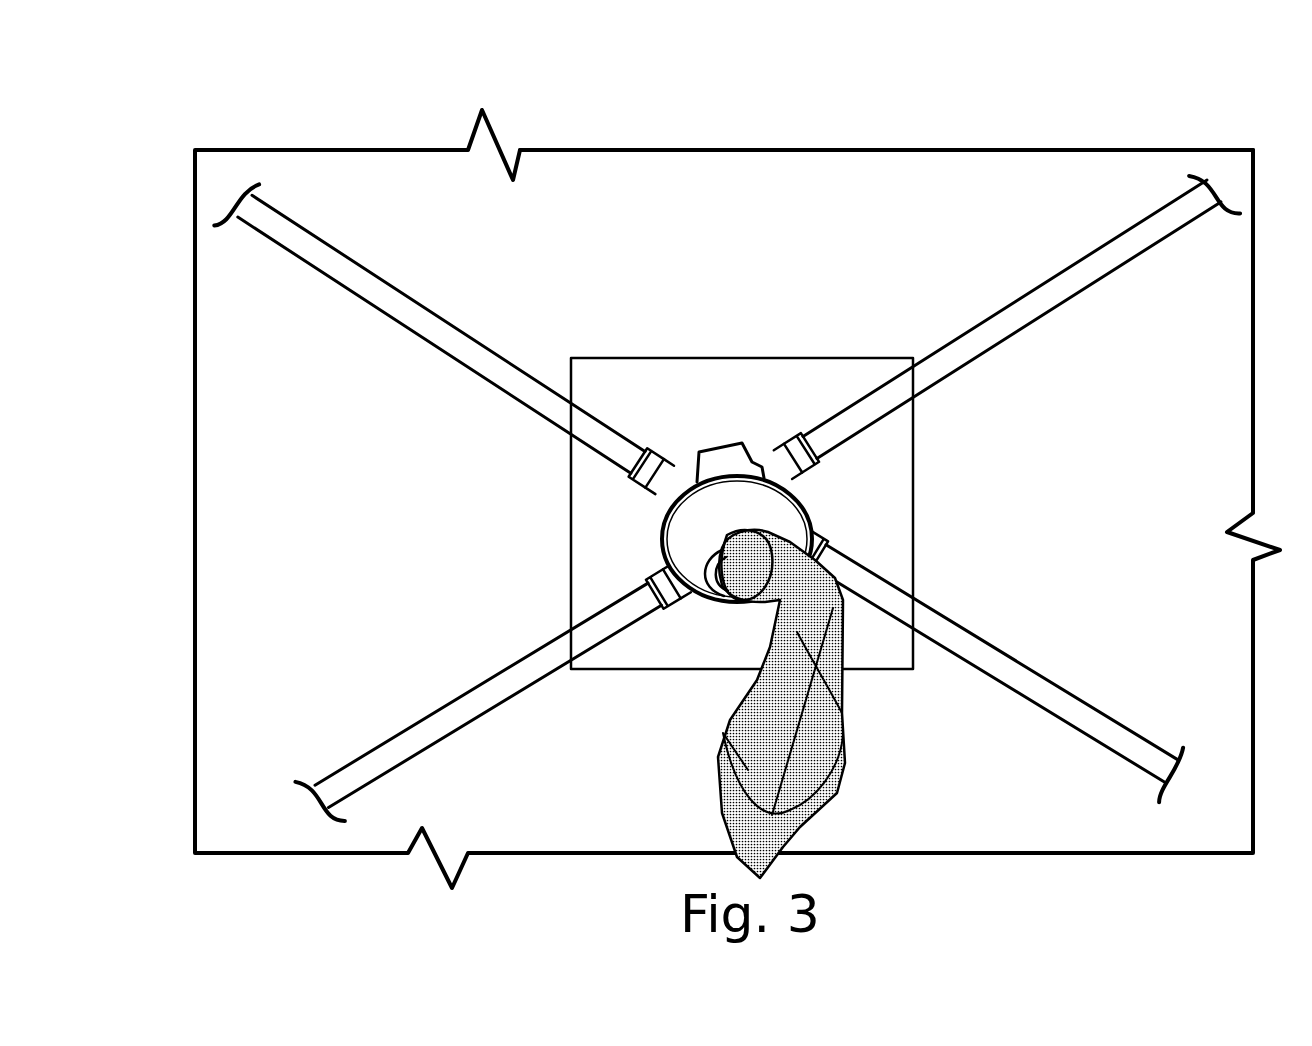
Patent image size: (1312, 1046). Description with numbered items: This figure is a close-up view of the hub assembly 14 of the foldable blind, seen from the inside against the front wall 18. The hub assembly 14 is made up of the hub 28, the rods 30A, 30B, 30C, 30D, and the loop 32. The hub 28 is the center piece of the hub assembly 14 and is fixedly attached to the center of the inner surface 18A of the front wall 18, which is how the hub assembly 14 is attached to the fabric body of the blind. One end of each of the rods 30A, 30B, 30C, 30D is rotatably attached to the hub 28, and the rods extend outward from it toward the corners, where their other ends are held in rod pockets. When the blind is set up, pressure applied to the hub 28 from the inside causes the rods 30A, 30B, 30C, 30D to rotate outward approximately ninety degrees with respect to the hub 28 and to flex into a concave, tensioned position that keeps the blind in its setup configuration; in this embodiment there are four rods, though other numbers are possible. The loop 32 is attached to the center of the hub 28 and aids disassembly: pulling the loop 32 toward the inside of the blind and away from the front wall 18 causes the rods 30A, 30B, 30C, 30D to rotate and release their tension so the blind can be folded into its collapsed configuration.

The hub assembly 14 is at (708, 650).
The front wall 18 is at (672, 200).
The inner surface 18A is at (827, 195).
The hub 28 is at (706, 529).
The rod 30A is at (358, 775).
The rod 30B is at (333, 248).
The rod 30C is at (1120, 247).
The rod 30D is at (1123, 748).
The loop 32 is at (842, 717).